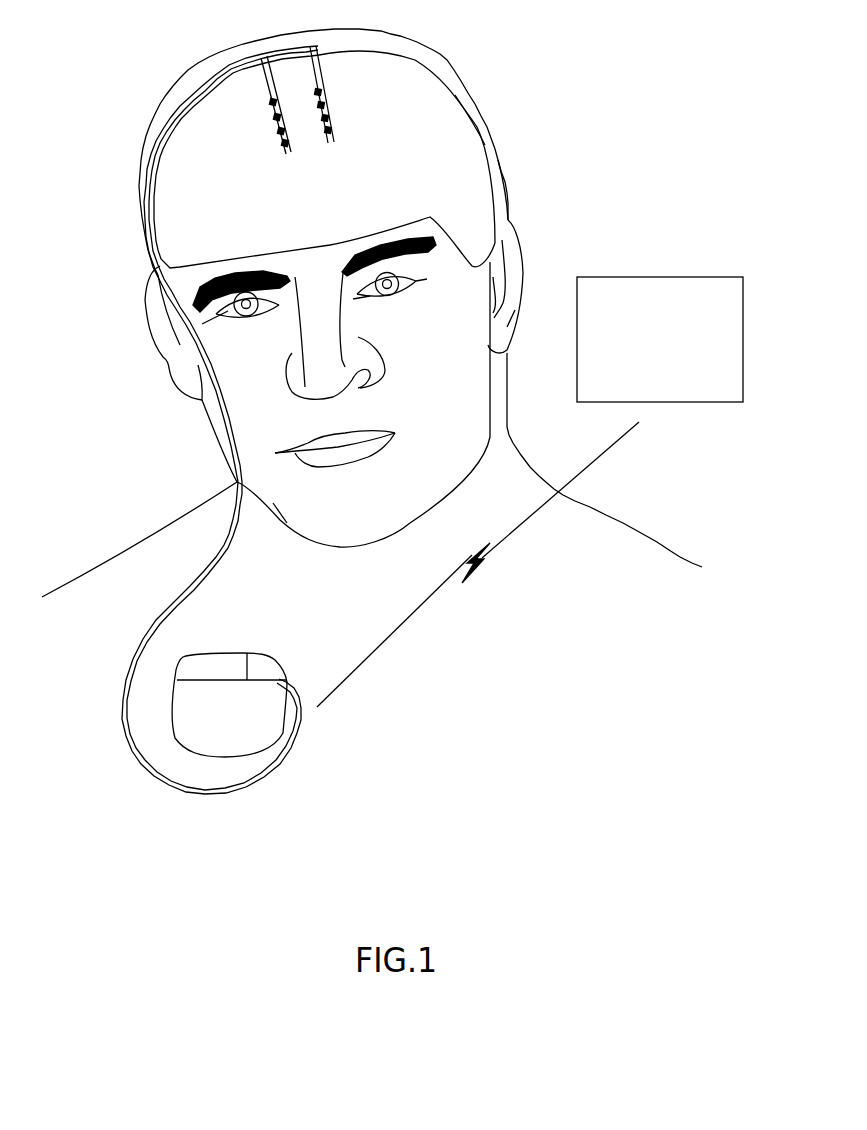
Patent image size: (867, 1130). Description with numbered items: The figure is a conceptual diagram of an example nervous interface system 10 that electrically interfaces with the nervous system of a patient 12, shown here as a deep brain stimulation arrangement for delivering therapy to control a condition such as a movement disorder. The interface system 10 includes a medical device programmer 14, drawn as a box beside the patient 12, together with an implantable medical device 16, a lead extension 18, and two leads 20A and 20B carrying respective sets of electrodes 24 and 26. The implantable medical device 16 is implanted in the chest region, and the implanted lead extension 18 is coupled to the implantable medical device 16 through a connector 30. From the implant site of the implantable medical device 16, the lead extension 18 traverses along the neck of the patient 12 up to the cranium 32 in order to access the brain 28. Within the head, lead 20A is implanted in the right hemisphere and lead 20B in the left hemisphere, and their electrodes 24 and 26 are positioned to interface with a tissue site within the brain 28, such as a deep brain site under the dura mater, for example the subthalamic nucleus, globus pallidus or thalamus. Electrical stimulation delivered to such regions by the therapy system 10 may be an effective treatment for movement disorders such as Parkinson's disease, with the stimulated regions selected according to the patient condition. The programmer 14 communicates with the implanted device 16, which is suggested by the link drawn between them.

The nervous interface system 10 is at (563, 50).
The patient 12 is at (107, 560).
The medical device programmer 14 is at (651, 356).
The implantable medical device 16 is at (232, 695).
The lead extension 18 is at (212, 570).
The lead 20A is at (269, 105).
The lead 20B is at (343, 94).
The electrodes 24 is at (268, 110).
The electrodes 26 is at (334, 92).
The brain 28 is at (491, 145).
The connector 30 is at (284, 676).
The cranium 32 is at (508, 197).